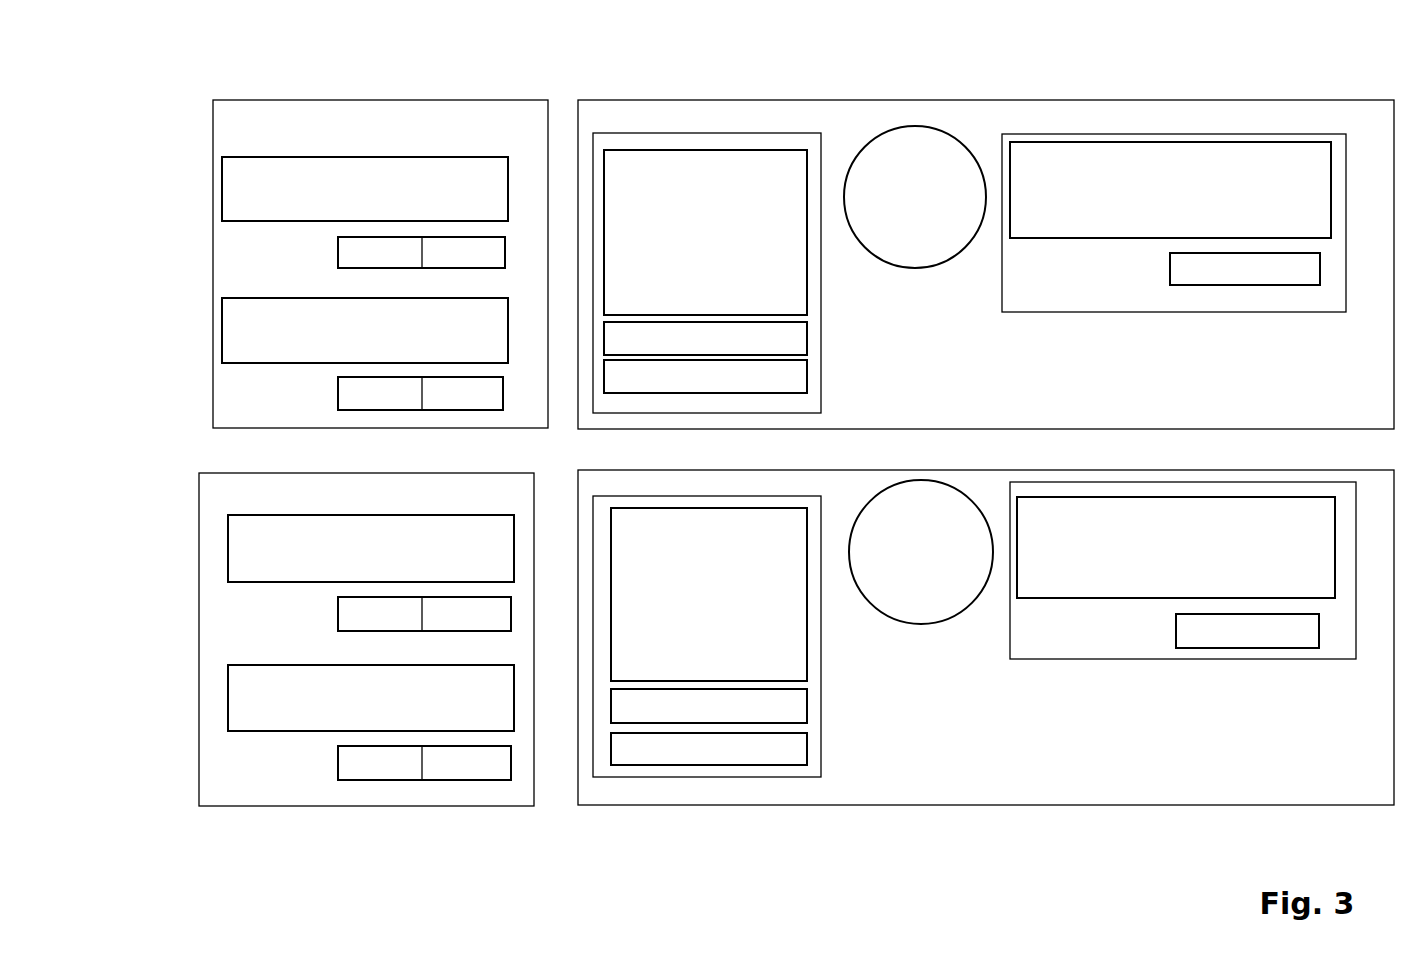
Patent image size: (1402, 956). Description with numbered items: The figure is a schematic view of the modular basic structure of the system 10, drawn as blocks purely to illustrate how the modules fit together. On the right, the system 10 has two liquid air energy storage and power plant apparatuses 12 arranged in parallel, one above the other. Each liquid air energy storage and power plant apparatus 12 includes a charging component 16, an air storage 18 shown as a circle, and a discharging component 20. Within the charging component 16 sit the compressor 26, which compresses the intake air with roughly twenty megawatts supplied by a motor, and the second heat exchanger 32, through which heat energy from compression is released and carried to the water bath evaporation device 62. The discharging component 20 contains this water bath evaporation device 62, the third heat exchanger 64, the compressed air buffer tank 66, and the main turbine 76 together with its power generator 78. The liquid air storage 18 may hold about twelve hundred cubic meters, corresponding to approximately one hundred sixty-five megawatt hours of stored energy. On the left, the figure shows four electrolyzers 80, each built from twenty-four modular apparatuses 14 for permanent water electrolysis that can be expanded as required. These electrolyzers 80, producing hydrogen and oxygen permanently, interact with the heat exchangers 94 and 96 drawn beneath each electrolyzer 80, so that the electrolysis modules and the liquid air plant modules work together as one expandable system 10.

The system 10 is at (243, 886).
The liquid air energy storage and power plant apparatus 12 is at (645, 103).
The apparatus for permanent water electrolysis 14 is at (367, 102).
The charging component 16 is at (1210, 133).
The air storage 18 is at (907, 126).
The discharging component 20 is at (790, 131).
The compressor 26 is at (1135, 140).
The second heat exchanger 32 is at (1200, 253).
The water bath evaporation device 62 is at (712, 148).
The third heat exchanger 64 is at (808, 338).
The compressed air buffer tank 66 is at (844, 473).
The main turbine 76 is at (705, 562).
The power generator 78 is at (808, 377).
The electrolyzer 80 is at (222, 183).
The heat exchanger 94 is at (443, 268).
The heat exchanger 96 is at (337, 248).